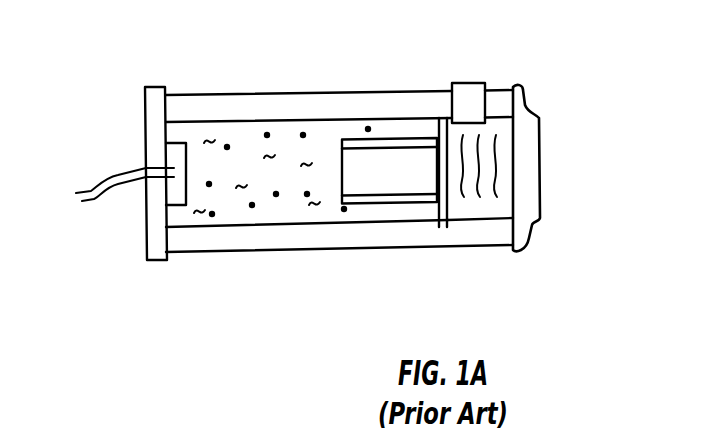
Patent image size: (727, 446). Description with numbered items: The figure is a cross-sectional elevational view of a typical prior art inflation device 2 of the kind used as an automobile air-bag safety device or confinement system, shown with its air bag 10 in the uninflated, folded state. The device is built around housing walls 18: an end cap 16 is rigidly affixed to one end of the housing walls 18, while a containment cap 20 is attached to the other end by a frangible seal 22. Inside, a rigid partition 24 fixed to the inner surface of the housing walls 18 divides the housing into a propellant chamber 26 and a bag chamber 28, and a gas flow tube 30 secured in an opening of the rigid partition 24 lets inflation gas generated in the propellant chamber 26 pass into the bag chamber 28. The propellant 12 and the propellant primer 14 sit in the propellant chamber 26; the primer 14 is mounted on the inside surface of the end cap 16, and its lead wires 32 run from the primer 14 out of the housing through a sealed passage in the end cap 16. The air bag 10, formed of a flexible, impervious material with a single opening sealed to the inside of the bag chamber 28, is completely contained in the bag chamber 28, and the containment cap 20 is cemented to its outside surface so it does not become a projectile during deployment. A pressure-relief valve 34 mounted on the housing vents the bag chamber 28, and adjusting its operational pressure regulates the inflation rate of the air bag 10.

The inflation device 2 is at (318, 151).
The air bag 10 is at (505, 129).
The propellant 12 is at (297, 203).
The propellant primer 14 is at (174, 158).
The end cap 16 is at (156, 130).
The housing walls 18 is at (245, 107).
The containment cap 20 is at (530, 160).
The frangible seal 22 is at (330, 92).
The rigid partition 24 is at (442, 223).
The propellant chamber 26 is at (233, 203).
The bag chamber 28 is at (482, 210).
The gas flow tube 30 is at (404, 187).
The lead wires 32 is at (84, 200).
The pressure-relief valve 34 is at (468, 93).